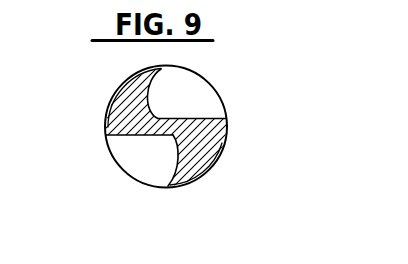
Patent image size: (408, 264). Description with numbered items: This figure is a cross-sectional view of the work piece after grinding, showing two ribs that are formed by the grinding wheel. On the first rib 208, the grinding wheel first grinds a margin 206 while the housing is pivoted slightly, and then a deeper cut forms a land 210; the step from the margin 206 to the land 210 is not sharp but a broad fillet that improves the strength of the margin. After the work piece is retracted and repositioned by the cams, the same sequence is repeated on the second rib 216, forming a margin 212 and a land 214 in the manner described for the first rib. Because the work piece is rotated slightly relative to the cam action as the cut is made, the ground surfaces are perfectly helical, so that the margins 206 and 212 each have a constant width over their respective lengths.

The margin 206 is at (105, 134).
The rib 208 is at (135, 104).
The land 210 is at (120, 90).
The margin 212 is at (226, 119).
The land 214 is at (197, 181).
The rib 216 is at (198, 141).